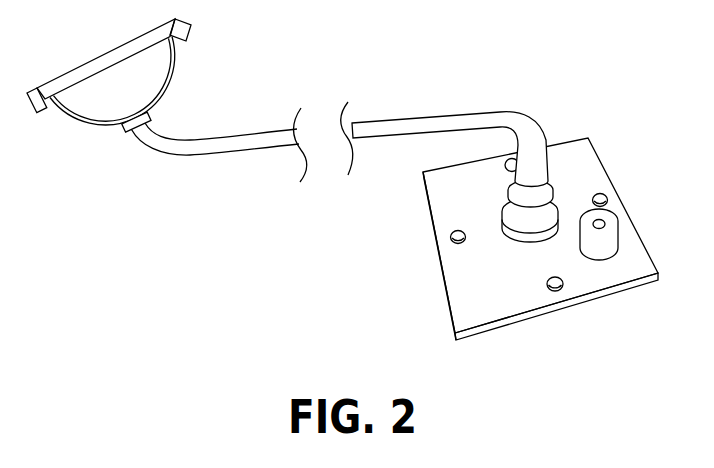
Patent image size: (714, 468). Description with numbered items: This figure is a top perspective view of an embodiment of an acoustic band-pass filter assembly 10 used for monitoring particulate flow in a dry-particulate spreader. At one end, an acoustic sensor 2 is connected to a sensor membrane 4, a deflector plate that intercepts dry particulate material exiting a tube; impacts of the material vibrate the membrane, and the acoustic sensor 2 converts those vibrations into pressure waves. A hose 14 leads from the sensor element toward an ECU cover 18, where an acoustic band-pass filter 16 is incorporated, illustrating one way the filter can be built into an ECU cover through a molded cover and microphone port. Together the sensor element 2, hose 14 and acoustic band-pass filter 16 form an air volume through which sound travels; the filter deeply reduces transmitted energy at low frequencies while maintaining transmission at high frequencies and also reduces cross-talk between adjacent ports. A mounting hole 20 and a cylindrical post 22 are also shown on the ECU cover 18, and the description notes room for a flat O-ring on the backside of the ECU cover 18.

The sensor assembly 10 is at (614, 94).
The acoustic sensor 2 is at (102, 107).
The sensor membrane 4 is at (98, 67).
The hose 14 is at (220, 154).
The acoustic band-pass filter 16 is at (550, 202).
The ECU cover 18 is at (498, 295).
The mounting hole 20 is at (450, 237).
The cylindrical post 22 is at (605, 247).